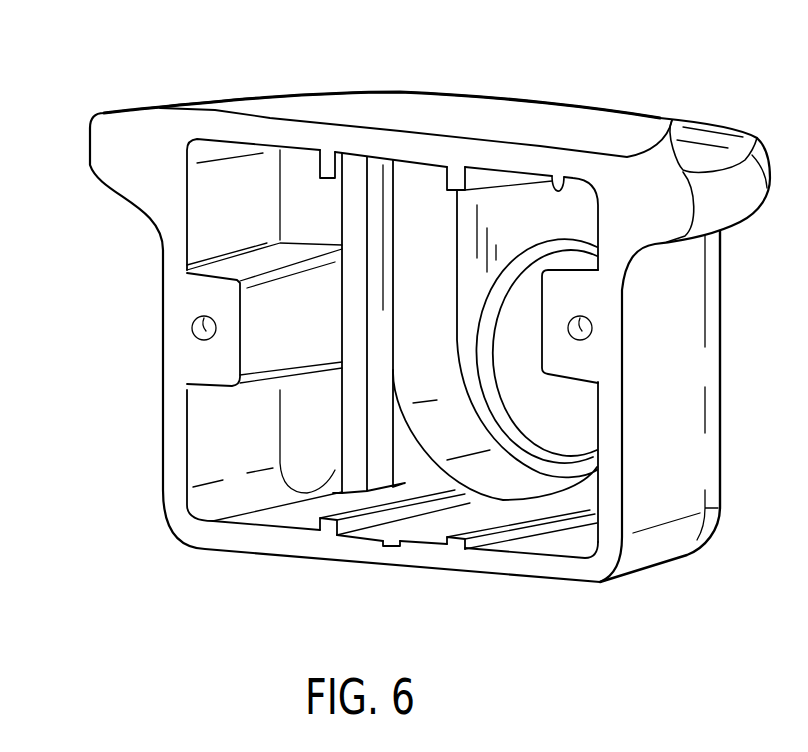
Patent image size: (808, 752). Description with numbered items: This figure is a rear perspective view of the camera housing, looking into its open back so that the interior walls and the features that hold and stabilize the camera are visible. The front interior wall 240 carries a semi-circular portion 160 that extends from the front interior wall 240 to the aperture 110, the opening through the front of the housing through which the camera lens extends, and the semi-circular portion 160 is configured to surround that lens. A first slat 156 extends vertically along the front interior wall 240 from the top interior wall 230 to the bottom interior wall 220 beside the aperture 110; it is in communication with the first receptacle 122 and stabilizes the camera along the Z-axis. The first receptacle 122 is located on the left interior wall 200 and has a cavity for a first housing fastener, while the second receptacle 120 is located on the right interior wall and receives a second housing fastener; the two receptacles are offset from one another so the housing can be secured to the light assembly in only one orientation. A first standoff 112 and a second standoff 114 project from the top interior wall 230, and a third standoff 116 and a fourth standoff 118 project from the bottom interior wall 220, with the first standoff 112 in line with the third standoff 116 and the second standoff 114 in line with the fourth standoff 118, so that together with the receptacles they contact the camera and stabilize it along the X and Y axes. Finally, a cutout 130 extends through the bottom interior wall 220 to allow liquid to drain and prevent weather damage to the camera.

The aperture 110 is at (570, 415).
The first standoff 112 is at (328, 162).
The second standoff 114 is at (453, 172).
The third standoff 116 is at (330, 530).
The fourth standoff 118 is at (458, 546).
The second receptacle 120 is at (580, 288).
The first receptacle 122 is at (220, 303).
The cutout 130 is at (397, 547).
The first slat 156 is at (358, 210).
The semi-circular portion 160 is at (483, 478).
The left interior wall 200 is at (207, 410).
The bottom interior wall 220 is at (285, 517).
The top interior wall 230 is at (559, 190).
The front interior wall 240 is at (402, 450).